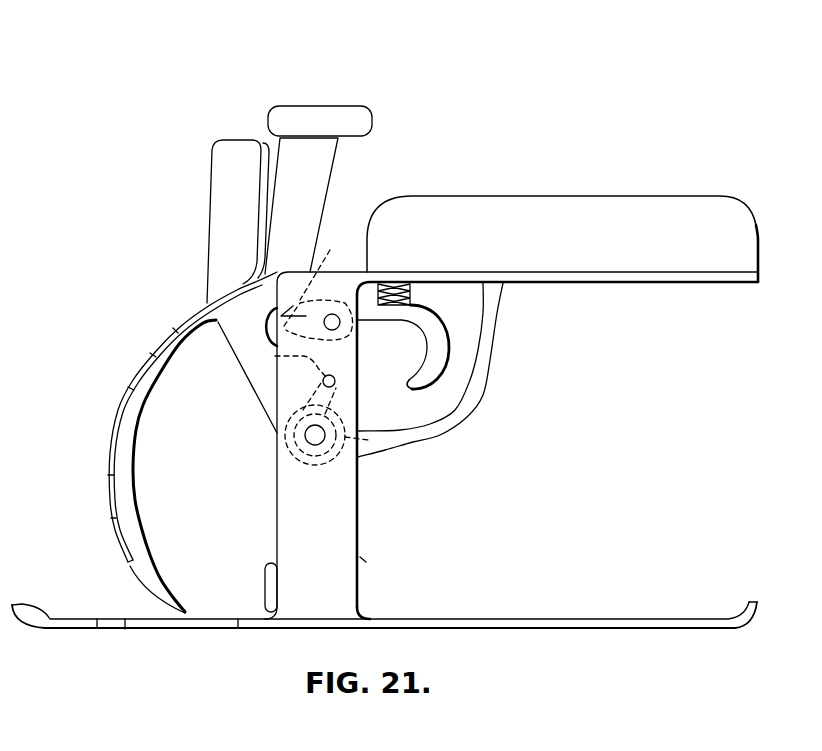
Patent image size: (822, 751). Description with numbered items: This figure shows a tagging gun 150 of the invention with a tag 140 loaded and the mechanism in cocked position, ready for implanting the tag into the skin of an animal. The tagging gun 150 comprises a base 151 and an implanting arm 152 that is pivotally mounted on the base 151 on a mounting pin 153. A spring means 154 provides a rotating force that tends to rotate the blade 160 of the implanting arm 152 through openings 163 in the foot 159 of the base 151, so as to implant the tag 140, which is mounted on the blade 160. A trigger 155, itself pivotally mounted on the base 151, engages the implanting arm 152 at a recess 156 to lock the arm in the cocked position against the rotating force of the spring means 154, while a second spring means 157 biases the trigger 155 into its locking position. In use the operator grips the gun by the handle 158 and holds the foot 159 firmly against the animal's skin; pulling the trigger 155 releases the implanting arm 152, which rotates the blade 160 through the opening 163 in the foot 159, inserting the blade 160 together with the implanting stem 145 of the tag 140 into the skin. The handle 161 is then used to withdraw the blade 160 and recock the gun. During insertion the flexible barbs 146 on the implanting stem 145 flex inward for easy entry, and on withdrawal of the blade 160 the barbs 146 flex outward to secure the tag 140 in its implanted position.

The tag 140 is at (207, 218).
The implanting stem 145 is at (117, 543).
The flexible barbs 146 is at (113, 432).
The tagging gun 150 is at (392, 177).
The base 151 is at (360, 545).
The implanting arm 152 is at (229, 342).
The mounting pin 153 is at (318, 437).
The spring means 154 is at (300, 437).
The trigger 155 is at (435, 321).
The recess 156 is at (290, 312).
The spring means 157 is at (412, 303).
The handle 158 is at (542, 192).
The foot 159 is at (543, 629).
The blade 160 is at (168, 589).
The handle 161 is at (316, 106).
The openings 163 is at (126, 629).